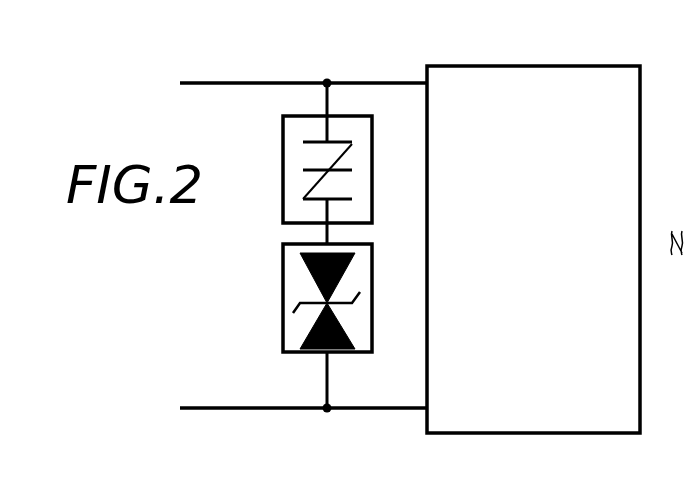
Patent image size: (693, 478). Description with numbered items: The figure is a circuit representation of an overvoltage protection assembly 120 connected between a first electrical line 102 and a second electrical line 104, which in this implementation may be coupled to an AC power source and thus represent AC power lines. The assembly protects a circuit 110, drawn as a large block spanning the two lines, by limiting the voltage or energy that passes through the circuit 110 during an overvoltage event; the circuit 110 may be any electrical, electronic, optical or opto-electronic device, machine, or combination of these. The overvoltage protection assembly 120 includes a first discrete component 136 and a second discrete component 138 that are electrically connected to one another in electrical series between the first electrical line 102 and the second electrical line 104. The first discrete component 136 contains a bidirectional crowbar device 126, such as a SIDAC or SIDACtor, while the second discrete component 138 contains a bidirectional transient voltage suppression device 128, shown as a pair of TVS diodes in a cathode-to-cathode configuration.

The overvoltage protection assembly 120 is at (273, 56).
The first electrical line 102 is at (268, 84).
The second electrical line 104 is at (222, 408).
The circuit 110 is at (559, 265).
The crowbar device 126 is at (352, 146).
The transient voltage suppression device 128 is at (342, 330).
The first discrete component 136 is at (283, 193).
The second discrete component 138 is at (283, 262).